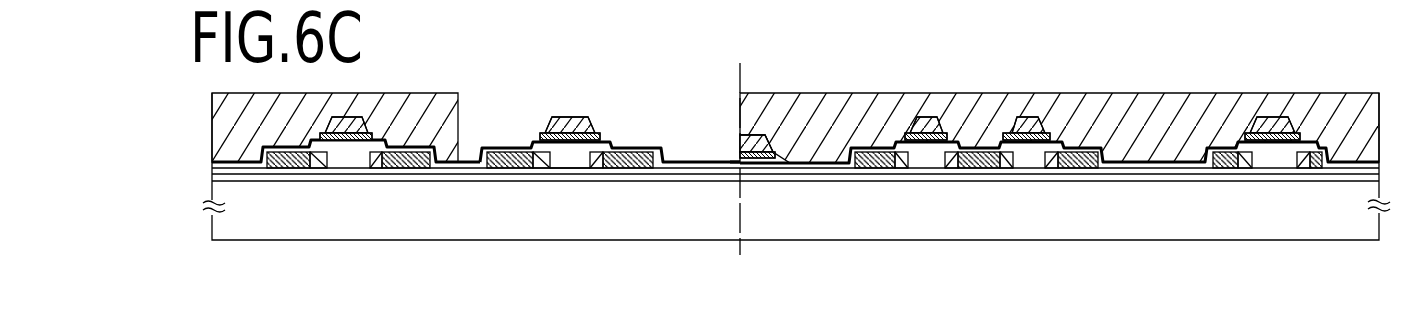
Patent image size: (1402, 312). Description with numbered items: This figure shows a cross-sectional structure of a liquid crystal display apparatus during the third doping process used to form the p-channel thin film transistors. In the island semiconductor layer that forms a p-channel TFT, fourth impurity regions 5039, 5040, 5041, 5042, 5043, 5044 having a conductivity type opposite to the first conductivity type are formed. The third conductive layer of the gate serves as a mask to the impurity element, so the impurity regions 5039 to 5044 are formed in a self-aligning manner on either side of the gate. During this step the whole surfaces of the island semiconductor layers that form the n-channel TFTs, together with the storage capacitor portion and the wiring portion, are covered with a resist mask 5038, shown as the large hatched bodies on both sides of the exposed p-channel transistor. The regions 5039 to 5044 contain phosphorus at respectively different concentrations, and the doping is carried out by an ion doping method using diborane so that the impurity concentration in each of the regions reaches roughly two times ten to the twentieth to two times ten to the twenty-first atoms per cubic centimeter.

The resist mask 5038 is at (758, 118).
The fourth impurity region 5039 is at (500, 169).
The fourth impurity region 5040 is at (518, 169).
The fourth impurity region 5041 is at (549, 169).
The fourth impurity region 5042 is at (594, 169).
The fourth impurity region 5043 is at (617, 169).
The fourth impurity region 5044 is at (648, 170).